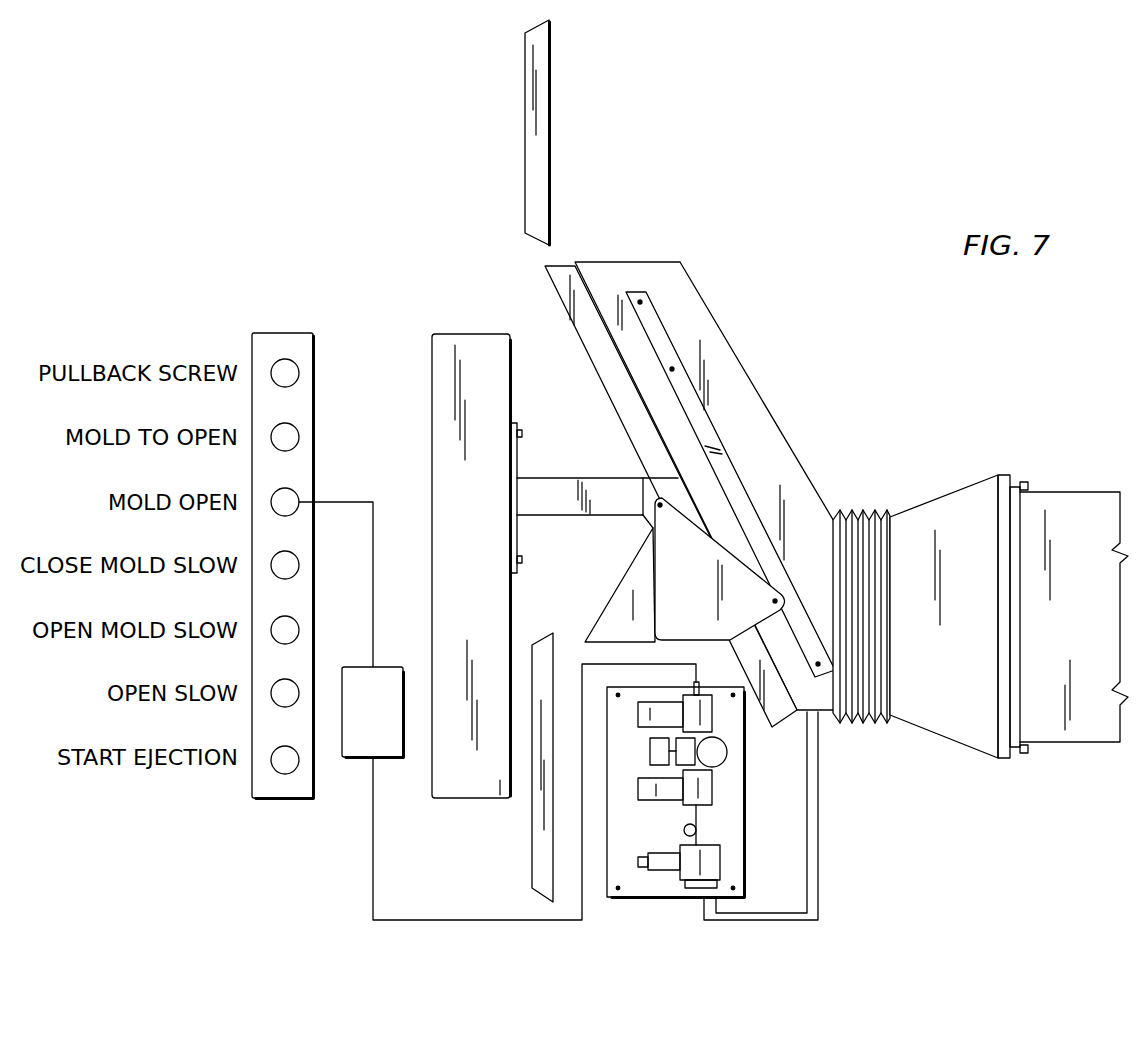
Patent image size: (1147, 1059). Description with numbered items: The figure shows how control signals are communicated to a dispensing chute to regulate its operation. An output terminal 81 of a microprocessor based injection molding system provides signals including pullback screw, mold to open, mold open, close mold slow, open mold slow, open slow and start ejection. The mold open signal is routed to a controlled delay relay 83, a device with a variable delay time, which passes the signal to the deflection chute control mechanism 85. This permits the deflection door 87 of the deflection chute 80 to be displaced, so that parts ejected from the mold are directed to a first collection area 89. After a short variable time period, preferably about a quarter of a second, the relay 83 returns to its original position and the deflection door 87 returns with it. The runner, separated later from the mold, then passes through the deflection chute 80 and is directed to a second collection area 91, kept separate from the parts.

The deflection chute 80 is at (925, 488).
The output terminal 81 is at (326, 428).
The controlled delay relay 83 is at (373, 712).
The deflection chute control mechanism 85 is at (752, 802).
The deflection door 87 is at (720, 569).
The first collection area 89 is at (550, 622).
The second collection area 91 is at (560, 126).